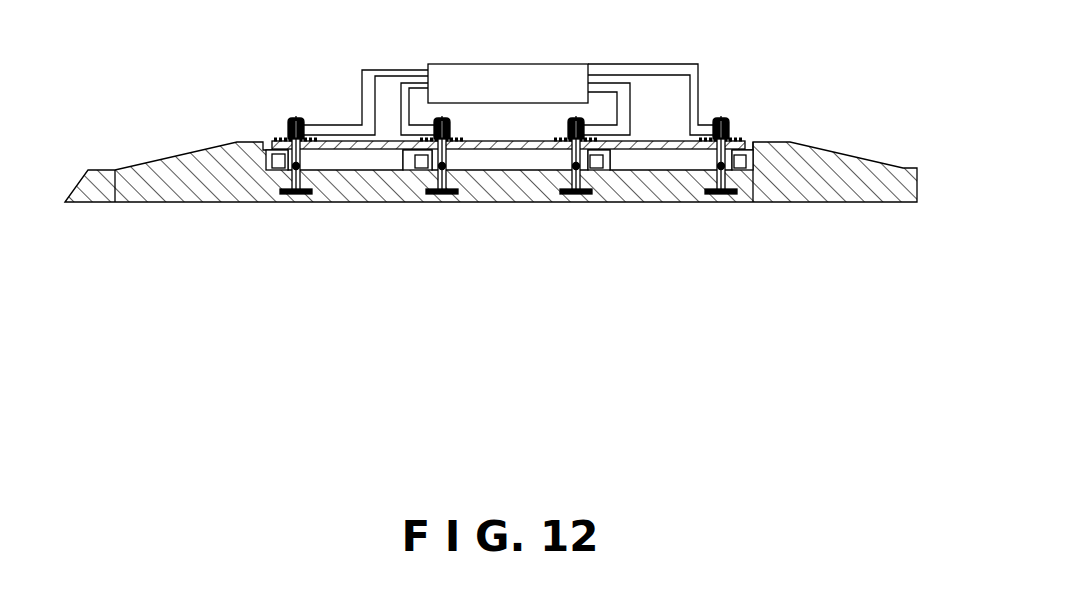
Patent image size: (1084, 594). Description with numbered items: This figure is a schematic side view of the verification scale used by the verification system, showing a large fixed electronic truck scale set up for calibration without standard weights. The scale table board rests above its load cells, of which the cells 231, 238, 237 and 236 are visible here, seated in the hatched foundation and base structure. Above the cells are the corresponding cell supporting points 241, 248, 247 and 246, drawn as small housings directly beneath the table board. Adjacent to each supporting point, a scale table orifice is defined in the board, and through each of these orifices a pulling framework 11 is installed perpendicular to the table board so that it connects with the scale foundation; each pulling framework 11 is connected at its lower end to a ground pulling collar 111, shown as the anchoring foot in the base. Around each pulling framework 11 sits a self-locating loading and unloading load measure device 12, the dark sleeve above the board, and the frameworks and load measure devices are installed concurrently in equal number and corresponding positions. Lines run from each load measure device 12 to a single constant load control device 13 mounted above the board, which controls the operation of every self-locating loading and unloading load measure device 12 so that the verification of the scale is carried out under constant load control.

The pulling framework 11 is at (299, 118).
The ground pulling collar 111 is at (293, 172).
The self-locating loading and unloading load measure device 12 is at (290, 124).
The constant load control device 13 is at (523, 78).
The cell 231 is at (279, 160).
The cell 236 is at (738, 160).
The cell 237 is at (597, 157).
The cell 238 is at (421, 160).
The cell supporting point 241 is at (267, 150).
The cell supporting point 246 is at (753, 168).
The cell supporting point 247 is at (607, 150).
The cell supporting point 248 is at (413, 150).